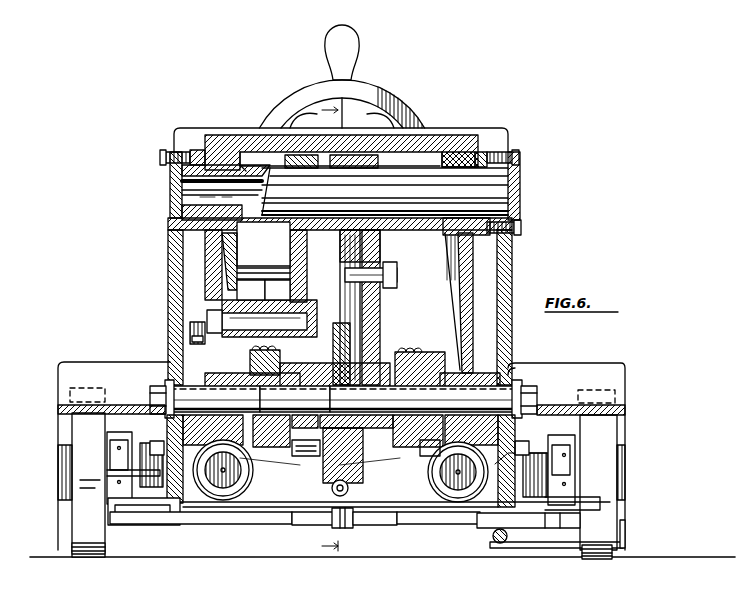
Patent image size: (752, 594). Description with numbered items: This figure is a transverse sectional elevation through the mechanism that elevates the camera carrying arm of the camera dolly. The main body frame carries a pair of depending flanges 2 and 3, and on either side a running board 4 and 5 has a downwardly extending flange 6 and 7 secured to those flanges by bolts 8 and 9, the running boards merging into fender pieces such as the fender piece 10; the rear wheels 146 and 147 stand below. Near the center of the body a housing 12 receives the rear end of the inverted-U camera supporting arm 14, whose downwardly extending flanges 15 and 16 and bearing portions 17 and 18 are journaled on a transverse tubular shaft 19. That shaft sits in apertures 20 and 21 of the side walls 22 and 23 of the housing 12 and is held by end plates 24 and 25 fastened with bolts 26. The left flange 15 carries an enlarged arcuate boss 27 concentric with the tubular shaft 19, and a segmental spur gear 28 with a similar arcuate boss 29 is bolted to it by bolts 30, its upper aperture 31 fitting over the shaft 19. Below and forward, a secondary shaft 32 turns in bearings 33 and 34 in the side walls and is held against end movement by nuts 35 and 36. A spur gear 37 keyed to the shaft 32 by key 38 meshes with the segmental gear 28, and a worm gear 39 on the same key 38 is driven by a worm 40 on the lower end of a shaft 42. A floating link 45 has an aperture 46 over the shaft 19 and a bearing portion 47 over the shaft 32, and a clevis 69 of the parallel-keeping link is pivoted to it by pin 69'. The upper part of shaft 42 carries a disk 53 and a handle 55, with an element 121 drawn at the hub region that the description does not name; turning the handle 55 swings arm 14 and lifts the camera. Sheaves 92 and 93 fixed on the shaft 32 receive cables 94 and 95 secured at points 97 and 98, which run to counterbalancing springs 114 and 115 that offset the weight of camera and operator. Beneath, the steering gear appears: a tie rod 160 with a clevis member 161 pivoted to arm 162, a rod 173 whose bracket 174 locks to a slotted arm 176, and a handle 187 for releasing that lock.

The handle 55 is at (352, 58).
The disk 53 is at (383, 92).
The hub 121 is at (302, 108).
The downwardly extending flange 7 is at (583, 453).
The camera supporting arm 14 is at (432, 136).
The bolts 26 is at (160, 159).
The end plate 25 is at (518, 165).
The end plate 24 is at (170, 183).
The bearing portion 17 is at (246, 170).
The aperture 31 is at (306, 168).
The aperture 46 is at (378, 165).
The bearing portion 18 is at (445, 166).
The tubular shaft 19 is at (350, 187).
The aperture 21 is at (500, 170).
The aperture 20 is at (184, 218).
The housing 12 is at (160, 266).
The flange 15 is at (206, 270).
The side wall 22 is at (205, 317).
The bolts 30 is at (200, 344).
The arcuate boss 27 is at (258, 310).
The arcuate boss 29 is at (276, 304).
The shaft 42 is at (346, 248).
The floating link 45 is at (372, 250).
The worm gear 39 is at (365, 334).
The segmental spur gear 28 is at (342, 346).
The clevis 69 is at (382, 264).
The pin 69' is at (403, 275).
The flange 16 is at (474, 312).
The side wall 23 is at (506, 340).
The cable 94 is at (264, 356).
The cable 95 is at (408, 356).
The cable securing point 97 is at (243, 374).
The cable securing point 98 is at (440, 374).
The secondary shaft 32 is at (218, 404).
The key 38 is at (308, 388).
The bearing portion 47 is at (384, 390).
The bearing 33 is at (168, 380).
The nut 35 is at (150, 398).
The bearing 34 is at (520, 380).
The nut 36 is at (533, 398).
The fender piece 10 is at (100, 347).
The running board 4 is at (125, 404).
The running board 5 is at (562, 404).
The bolt 8 is at (150, 450).
The downwardly extending flange 6 is at (158, 441).
The bolt 9 is at (528, 450).
The sheave 92 is at (250, 440).
The sheave 93 is at (438, 436).
The worm 40 is at (358, 472).
The spur gear 37 is at (300, 466).
The counterbalancing spring 114 is at (232, 510).
The depending flange 2 is at (194, 512).
The tie rod 160 is at (272, 524).
The clevis member 161 is at (306, 525).
The arm 162 is at (372, 525).
The counterbalancing spring 115 is at (440, 512).
The depending flange 3 is at (482, 526).
The rod 173 is at (498, 545).
The bracket 174 is at (562, 549).
The slotted arm 176 is at (560, 506).
The handle 187 is at (626, 538).
The rear wheel 146 is at (102, 558).
The rear wheel 147 is at (608, 560).